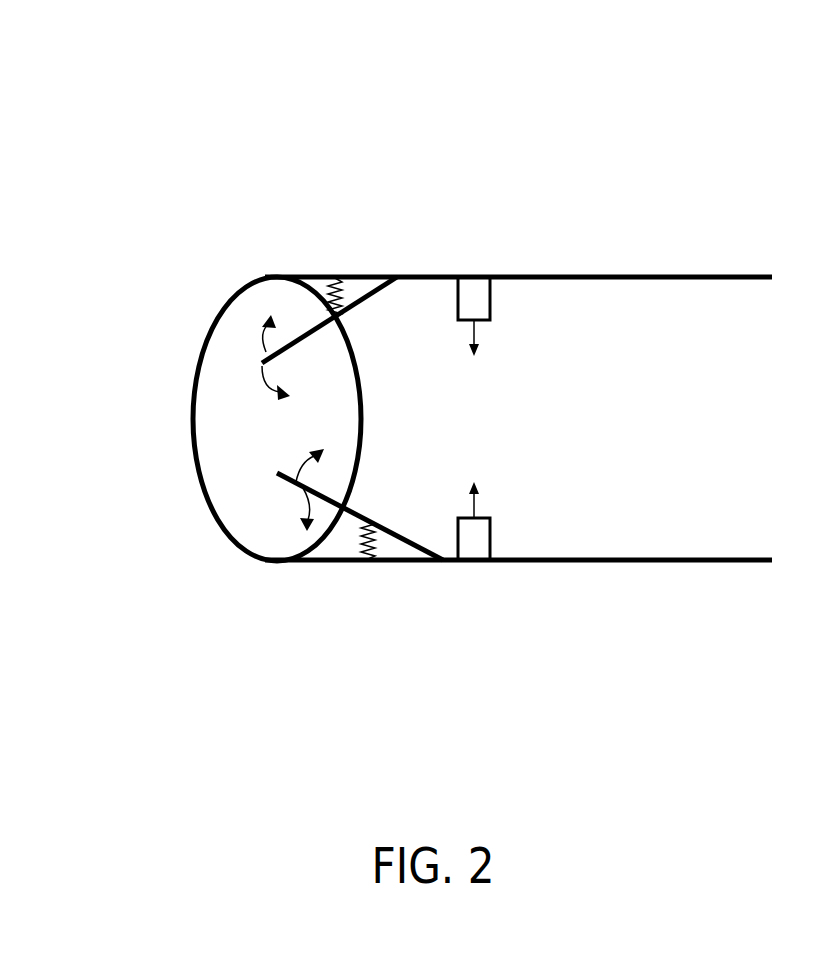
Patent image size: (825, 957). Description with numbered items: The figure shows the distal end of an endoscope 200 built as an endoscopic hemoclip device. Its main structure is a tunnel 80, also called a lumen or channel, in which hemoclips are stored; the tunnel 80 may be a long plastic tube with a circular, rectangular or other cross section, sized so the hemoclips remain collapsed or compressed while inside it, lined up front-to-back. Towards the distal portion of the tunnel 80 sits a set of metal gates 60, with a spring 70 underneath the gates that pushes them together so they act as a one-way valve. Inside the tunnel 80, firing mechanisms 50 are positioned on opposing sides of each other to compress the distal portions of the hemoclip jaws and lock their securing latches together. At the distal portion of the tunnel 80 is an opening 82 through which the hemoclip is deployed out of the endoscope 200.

The endoscope 200 is at (728, 68).
The firing mechanism 50 is at (490, 303).
The set of metal gates 60 is at (262, 357).
The spring 70 is at (333, 277).
The tunnel 80 is at (626, 277).
The opening 82 is at (196, 458).